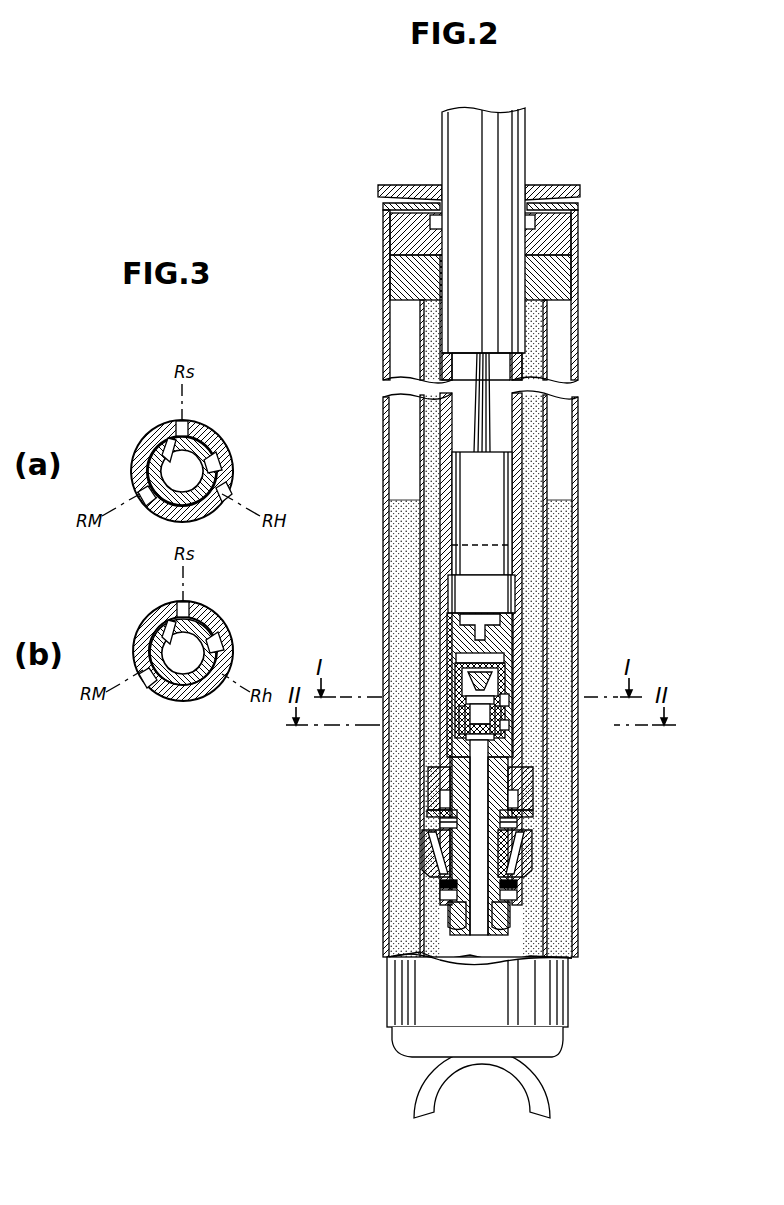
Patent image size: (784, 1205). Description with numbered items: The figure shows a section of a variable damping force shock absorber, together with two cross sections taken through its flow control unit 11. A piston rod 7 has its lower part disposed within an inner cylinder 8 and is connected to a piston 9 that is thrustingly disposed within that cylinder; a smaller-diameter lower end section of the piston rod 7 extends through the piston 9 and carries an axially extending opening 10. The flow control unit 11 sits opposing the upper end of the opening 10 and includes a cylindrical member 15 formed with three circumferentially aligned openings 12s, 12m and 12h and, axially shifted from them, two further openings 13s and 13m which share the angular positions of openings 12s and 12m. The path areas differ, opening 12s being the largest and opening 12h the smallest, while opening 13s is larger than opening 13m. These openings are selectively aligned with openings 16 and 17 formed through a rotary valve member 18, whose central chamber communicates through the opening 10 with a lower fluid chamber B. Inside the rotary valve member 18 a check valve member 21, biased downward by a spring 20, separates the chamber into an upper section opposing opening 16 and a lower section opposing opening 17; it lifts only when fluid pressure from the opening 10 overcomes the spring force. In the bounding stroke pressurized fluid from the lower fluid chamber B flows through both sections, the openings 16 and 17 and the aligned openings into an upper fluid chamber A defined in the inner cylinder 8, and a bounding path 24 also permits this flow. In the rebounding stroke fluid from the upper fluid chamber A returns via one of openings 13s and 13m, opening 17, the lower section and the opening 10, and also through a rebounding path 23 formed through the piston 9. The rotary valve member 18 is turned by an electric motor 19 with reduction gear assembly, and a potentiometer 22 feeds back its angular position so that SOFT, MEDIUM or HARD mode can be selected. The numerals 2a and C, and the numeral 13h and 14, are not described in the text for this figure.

In FIG. 2, the piston rod 7 is at (508, 140).
In FIG. 2, the outer cylinder / cylinder bodies 2a-2d 2a is at (586, 637).
In FIG. 2, the inner cylinder 8 is at (522, 738).
In FIG. 2, the piston 9 is at (534, 832).
In FIG. 2, the axially extending opening 10 is at (445, 958).
In FIG. 2, the flow control unit 11 is at (528, 736).
In FIG. 3, the flow control unit 11 is at (222, 428).
In FIG. 2, the opening 12h is at (509, 700).
In FIG. 3, the opening 12h is at (224, 490).
In FIG. 3, the opening 12s is at (186, 421).
In FIG. 3, the opening 12m is at (140, 494).
In FIG. 2, the hard orifice (second) 13h is at (509, 724).
In FIG. 3, the opening 13s is at (187, 602).
In FIG. 3, the opening 13m is at (146, 686).
In FIG. 3, the outer sleeve 14 is at (214, 436).
In FIG. 2, the cylindrical member 15 is at (462, 708).
In FIG. 3, the cylindrical member 15 is at (148, 450).
In FIG. 3, the opening 16 is at (168, 440).
In FIG. 3, the opening 17 is at (168, 622).
In FIG. 2, the rotary valve member 18 is at (503, 716).
In FIG. 3, the rotary valve member 18 is at (214, 466).
In FIG. 2, the electric motor 19 is at (500, 511).
In FIG. 2, the spring 20 is at (470, 727).
In FIG. 2, the check valve member 21 is at (468, 738).
In FIG. 2, the potentiometer 22 is at (458, 596).
In FIG. 2, the rebounding path 23 is at (436, 836).
In FIG. 2, the bounding path 24 is at (520, 882).
In FIG. 2, the upper fluid chamber A is at (535, 566).
In FIG. 2, the lower fluid chamber B is at (510, 958).
In FIG. 2, the reservoir chamber C is at (560, 552).